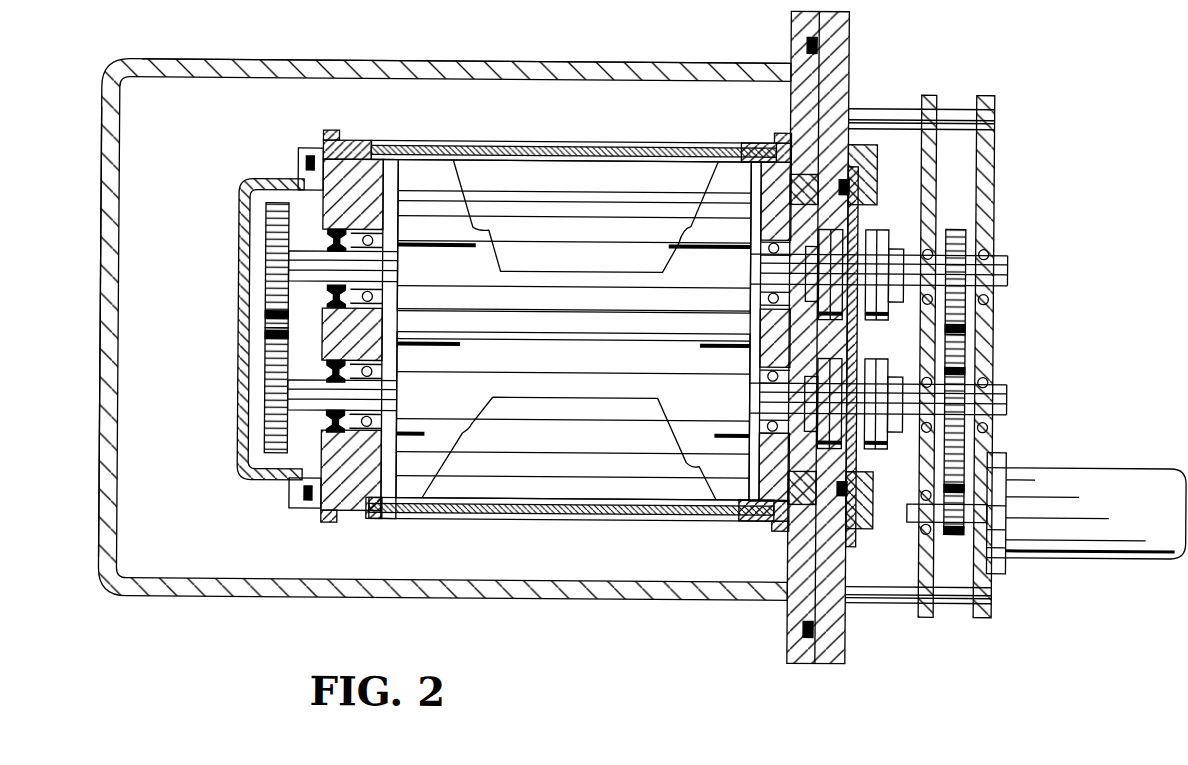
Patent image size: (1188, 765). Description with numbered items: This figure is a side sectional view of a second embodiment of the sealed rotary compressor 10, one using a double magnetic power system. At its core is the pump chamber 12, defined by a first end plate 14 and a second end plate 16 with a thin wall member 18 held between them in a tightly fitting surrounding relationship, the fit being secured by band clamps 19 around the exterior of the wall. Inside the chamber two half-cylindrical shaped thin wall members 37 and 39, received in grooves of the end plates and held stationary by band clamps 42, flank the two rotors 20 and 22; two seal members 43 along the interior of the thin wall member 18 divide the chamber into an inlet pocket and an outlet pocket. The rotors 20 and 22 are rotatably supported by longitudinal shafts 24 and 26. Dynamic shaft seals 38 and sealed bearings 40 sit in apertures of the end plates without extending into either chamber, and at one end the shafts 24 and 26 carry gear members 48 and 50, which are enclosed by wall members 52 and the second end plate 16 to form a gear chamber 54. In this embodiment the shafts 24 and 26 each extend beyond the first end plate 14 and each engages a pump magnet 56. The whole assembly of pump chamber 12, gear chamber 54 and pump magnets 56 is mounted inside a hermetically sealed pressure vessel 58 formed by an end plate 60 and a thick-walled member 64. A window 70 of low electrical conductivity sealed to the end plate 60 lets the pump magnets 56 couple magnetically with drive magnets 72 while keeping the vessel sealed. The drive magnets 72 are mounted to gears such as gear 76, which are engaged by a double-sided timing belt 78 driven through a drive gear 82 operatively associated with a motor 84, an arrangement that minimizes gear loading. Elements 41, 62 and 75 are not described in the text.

The sealed rotary compressor 10 is at (663, 352).
The pump chamber 12 is at (398, 474).
The first end plate 14 is at (758, 482).
The second end plate 16 is at (343, 508).
The thin wall member 18 is at (538, 152).
The band clamps 19 is at (332, 133).
The rotor 20 is at (574, 206).
The rotor 22 is at (573, 447).
The longitudinal shaft 24 is at (318, 245).
The longitudinal shaft 26 is at (293, 481).
The shaped thin wall member 37 is at (507, 210).
The dynamic shaft seals 38 is at (325, 374).
The shaped thin wall member 39 is at (505, 465).
The sealed bearings 40 is at (783, 375).
The bearing 41 is at (368, 352).
The band clamps 42 is at (376, 513).
The seal members 43 is at (598, 152).
The gear member 48 is at (266, 232).
The gear member 50 is at (262, 418).
The wall members 52 is at (242, 478).
The gear chamber 54 is at (258, 272).
The pump magnet 56 is at (878, 258).
The pressure vessel 58 is at (212, 613).
The end plate 60 is at (415, 62).
The housing side wall 62 is at (100, 112).
The thick-walled member 64 is at (848, 70).
The window 70 is at (850, 220).
The drive magnet 72 is at (856, 350).
The drive gear 75 is at (950, 227).
The gear 76 is at (966, 420).
The double-sided timing belt 78 is at (966, 345).
The drive gear 82 is at (944, 535).
The motor 84 is at (1095, 466).